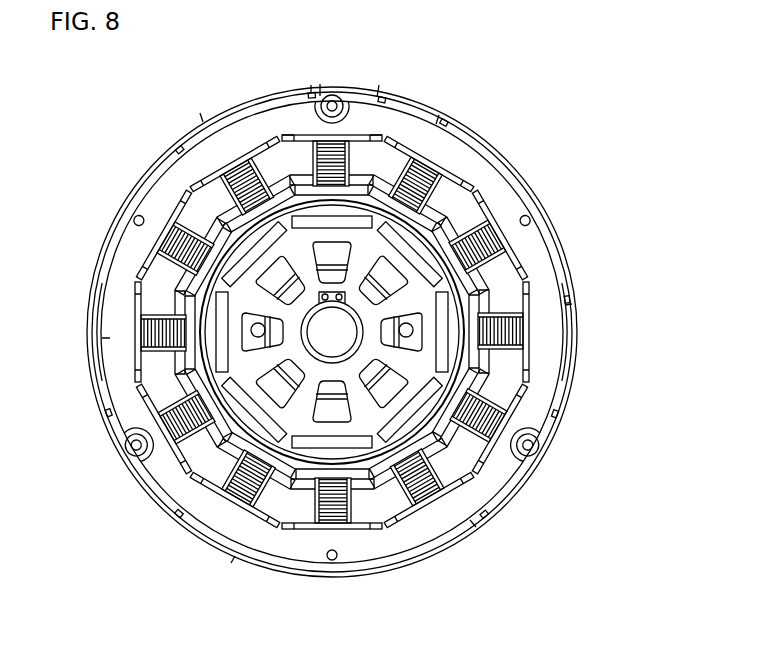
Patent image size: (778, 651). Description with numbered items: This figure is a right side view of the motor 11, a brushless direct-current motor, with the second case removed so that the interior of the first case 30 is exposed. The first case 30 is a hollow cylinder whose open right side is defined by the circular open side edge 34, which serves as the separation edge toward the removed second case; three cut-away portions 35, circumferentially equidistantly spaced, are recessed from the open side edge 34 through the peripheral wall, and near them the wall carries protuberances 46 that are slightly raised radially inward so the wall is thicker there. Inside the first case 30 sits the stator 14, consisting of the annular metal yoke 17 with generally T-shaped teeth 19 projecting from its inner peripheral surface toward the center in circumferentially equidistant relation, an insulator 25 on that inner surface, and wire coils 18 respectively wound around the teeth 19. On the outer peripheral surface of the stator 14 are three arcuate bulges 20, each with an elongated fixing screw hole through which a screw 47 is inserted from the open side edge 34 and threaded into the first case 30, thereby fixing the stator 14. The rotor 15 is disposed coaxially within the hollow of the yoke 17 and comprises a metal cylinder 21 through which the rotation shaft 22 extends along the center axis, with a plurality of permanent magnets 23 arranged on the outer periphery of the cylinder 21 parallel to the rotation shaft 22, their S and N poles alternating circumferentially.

The motor 11 is at (350, 624).
The stator 14 is at (116, 304).
The rotor 15 is at (302, 416).
The yoke 17 is at (195, 165).
The wire coils 18 is at (500, 275).
The teeth 19 is at (478, 240).
The bulges 20 is at (320, 92).
The cylinder 21 is at (360, 250).
The rotation shaft 22 is at (178, 522).
The permanent magnets 23 is at (165, 285).
The insulator 25 is at (312, 528).
The first case 30 is at (570, 328).
The open side edge 34 is at (458, 122).
The cut-away portions 35 is at (356, 95).
The protuberances 46 is at (203, 122).
The screws 47 is at (332, 95).